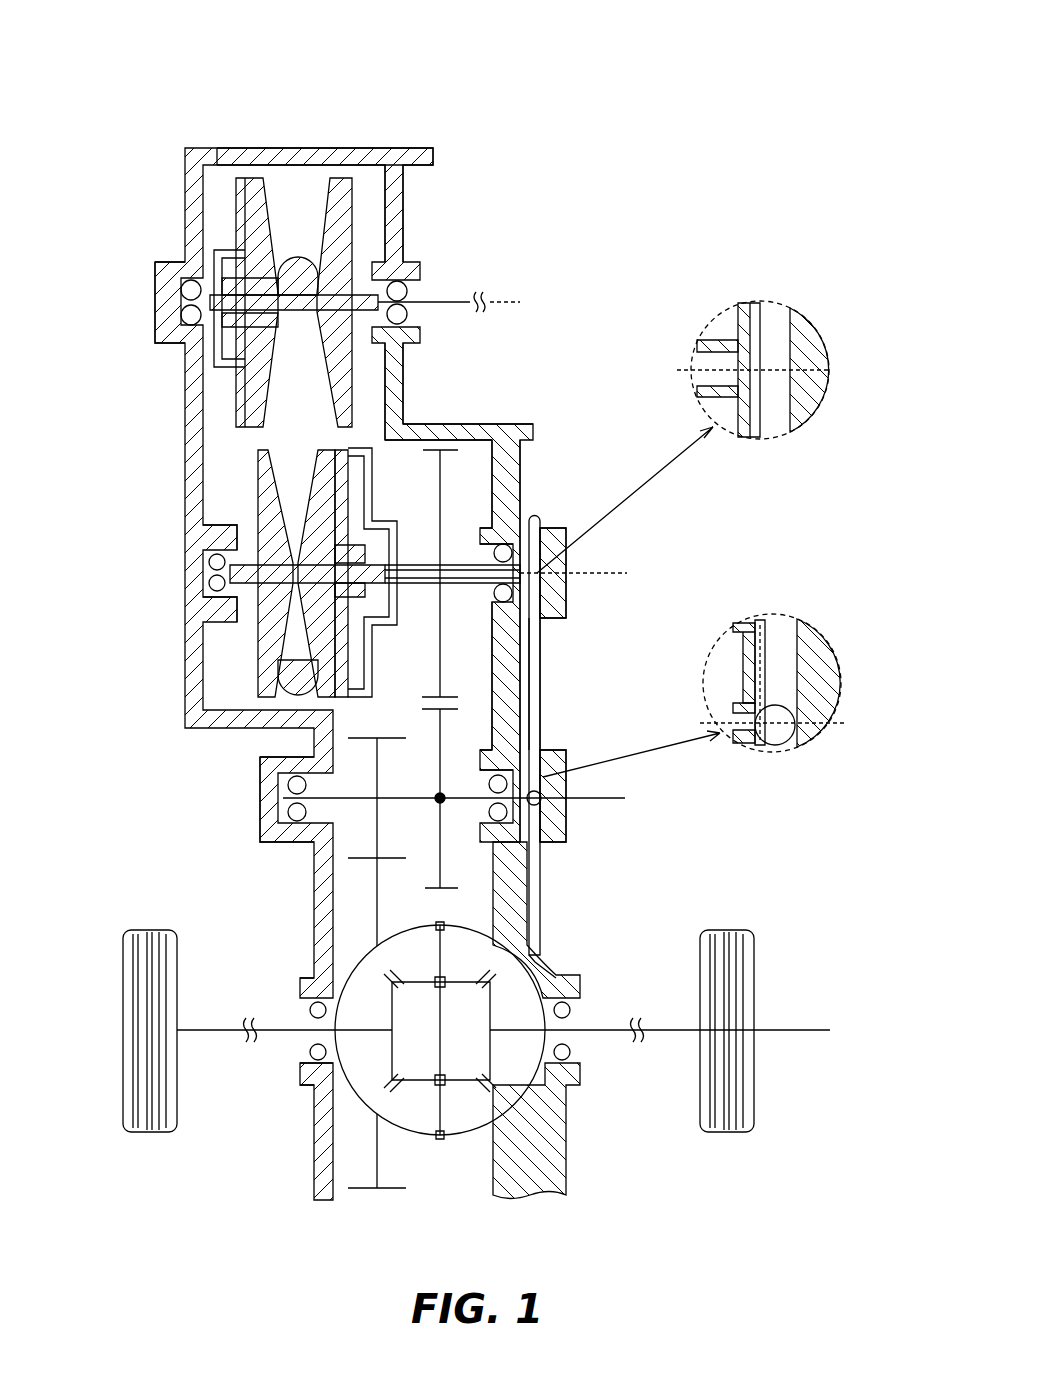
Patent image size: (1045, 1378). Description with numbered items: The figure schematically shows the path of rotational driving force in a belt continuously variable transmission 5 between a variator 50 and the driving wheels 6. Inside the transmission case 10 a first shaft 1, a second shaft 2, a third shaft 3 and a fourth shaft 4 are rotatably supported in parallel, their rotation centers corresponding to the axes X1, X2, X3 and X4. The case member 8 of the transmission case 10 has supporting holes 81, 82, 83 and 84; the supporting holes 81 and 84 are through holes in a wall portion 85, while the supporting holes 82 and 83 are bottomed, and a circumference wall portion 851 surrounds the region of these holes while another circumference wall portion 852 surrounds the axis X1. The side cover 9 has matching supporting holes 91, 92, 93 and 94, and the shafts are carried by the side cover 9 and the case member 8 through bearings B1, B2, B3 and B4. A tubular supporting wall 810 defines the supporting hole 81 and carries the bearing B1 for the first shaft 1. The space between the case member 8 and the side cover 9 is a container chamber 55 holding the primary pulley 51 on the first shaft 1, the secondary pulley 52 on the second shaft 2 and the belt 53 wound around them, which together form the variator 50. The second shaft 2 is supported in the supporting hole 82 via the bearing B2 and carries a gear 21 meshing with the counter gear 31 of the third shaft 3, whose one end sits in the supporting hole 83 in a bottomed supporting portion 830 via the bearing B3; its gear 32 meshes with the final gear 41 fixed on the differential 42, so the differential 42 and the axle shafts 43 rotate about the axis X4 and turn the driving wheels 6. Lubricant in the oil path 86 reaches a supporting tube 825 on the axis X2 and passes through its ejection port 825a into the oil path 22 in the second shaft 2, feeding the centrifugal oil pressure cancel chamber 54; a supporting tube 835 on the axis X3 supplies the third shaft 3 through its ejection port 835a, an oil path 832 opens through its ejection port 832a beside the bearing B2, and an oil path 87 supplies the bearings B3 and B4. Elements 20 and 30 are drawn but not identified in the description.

The first shaft 1 is at (382, 276).
The second shaft 2 is at (445, 569).
The third shaft 3 is at (471, 771).
The fourth shaft 4 is at (471, 1088).
The continuously variable transmission 5 is at (476, 627).
The driving wheels 6 is at (147, 1133).
The case member 8 is at (405, 619).
The side cover 9 is at (199, 148).
The transmission case 10 is at (374, 600).
The spline portion 20 is at (705, 405).
The gear 21 is at (438, 662).
The oil path 22 is at (418, 584).
The ball 30 is at (534, 798).
The counter gear 31 is at (441, 861).
The gear 32 is at (379, 838).
The final gear 41 is at (378, 906).
The differential 42 is at (441, 1136).
The axle shafts 43 is at (521, 1002).
The variator 50 is at (254, 437).
The primary pulley 51 is at (246, 378).
The secondary pulley 52 is at (242, 573).
The belt 53 is at (268, 432).
The centrifugal oil pressure cancel chamber 54 is at (362, 486).
The container chamber 55 is at (248, 673).
The supporting hole 81 is at (403, 195).
The supporting hole 82 is at (486, 540).
The supporting hole 83 is at (484, 770).
The supporting hole 84 is at (540, 1068).
The wall portion 85 is at (520, 482).
The oil path 86 is at (541, 680).
The oil path 87 is at (547, 922).
The supporting hole 91 is at (172, 285).
The supporting hole 92 is at (197, 598).
The supporting hole 93 is at (297, 832).
The supporting hole 94 is at (305, 1058).
The supporting wall 810 is at (403, 352).
The supporting tube 825 is at (745, 320).
The ejection port 825a is at (725, 343).
The supporting portion 830 is at (542, 877).
The oil path 832 is at (713, 697).
The ejection port 832a is at (740, 638).
The supporting tube 835 is at (745, 742).
The ejection port 835a is at (735, 708).
The circumference wall portion 851 is at (350, 147).
The circumference wall portion 852 is at (425, 147).
The bearing B1 is at (182, 303).
The bearing B2 is at (210, 565).
The bearing B3 is at (290, 789).
The bearing B4 is at (311, 1010).
The axis X1 is at (522, 302).
The axis X2 is at (590, 573).
The axis X3 is at (644, 798).
The axis X4 is at (849, 1030).